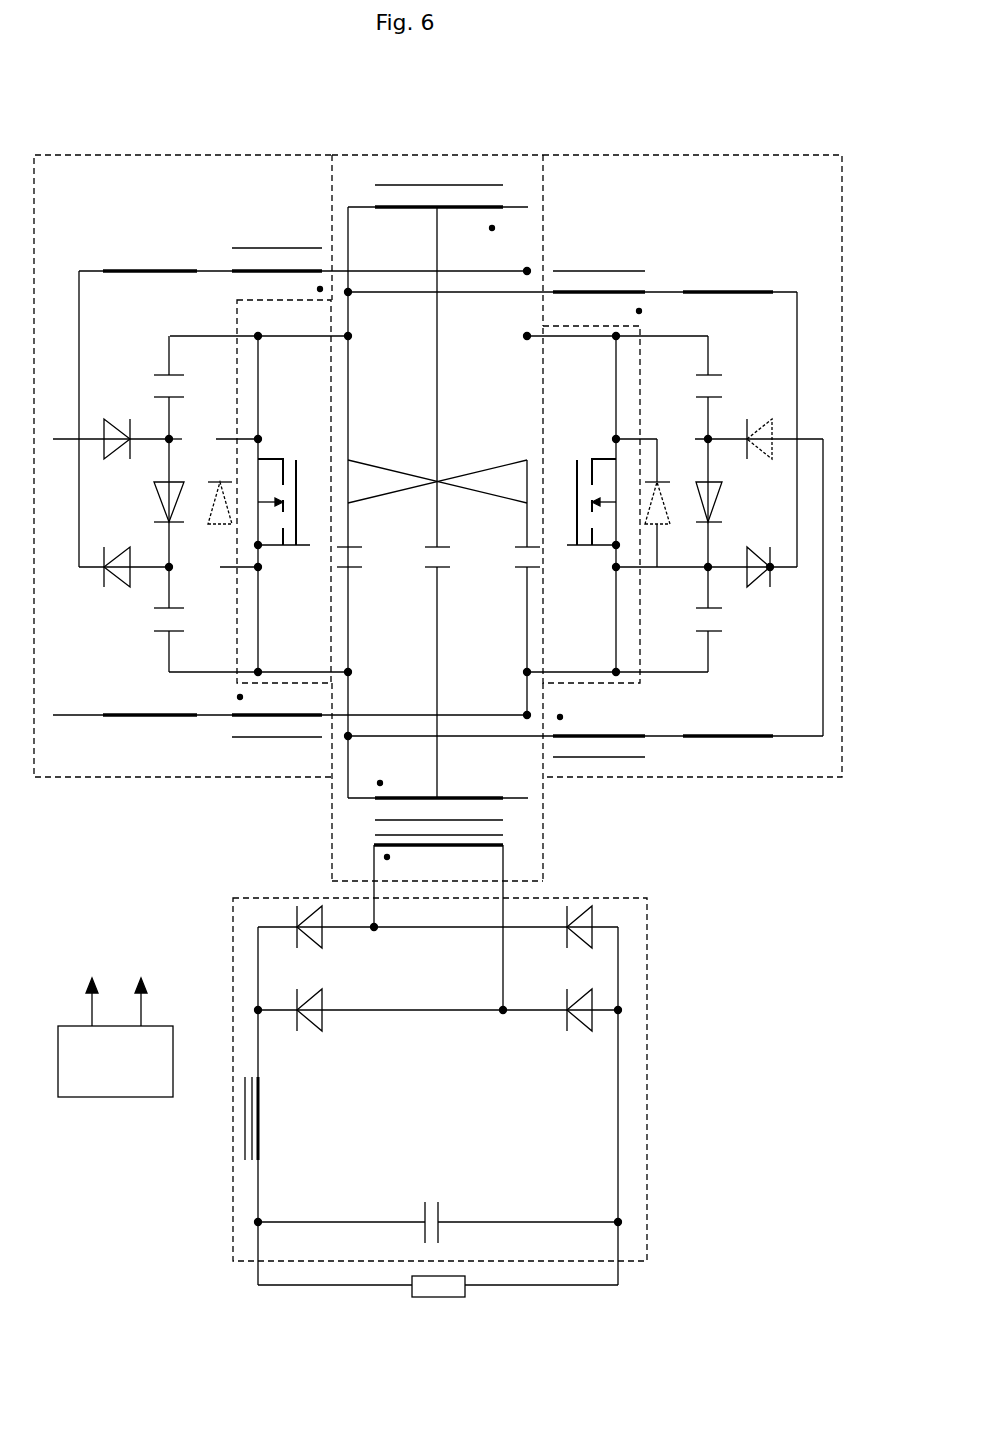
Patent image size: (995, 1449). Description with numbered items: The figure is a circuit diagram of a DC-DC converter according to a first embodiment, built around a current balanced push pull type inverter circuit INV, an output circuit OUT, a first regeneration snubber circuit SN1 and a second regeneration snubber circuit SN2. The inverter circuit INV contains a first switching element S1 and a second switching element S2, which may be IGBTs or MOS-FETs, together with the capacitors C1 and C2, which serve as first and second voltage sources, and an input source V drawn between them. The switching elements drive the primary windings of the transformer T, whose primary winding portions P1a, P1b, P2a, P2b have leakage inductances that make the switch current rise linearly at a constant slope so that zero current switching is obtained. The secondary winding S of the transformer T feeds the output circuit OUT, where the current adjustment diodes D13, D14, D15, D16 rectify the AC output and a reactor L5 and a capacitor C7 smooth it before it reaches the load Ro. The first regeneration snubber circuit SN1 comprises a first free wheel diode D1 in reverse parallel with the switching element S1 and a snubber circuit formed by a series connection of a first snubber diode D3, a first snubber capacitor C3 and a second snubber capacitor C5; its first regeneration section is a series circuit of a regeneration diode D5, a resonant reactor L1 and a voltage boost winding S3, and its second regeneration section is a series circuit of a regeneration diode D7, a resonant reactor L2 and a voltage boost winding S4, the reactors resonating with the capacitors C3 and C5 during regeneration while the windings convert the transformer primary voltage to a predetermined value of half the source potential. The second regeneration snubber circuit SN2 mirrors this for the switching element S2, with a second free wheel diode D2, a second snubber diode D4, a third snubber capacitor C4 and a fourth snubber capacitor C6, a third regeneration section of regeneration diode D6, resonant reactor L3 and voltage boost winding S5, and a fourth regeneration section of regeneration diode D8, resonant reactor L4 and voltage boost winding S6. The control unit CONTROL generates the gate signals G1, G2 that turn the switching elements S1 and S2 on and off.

The first regeneration snubber circuit SN1 is at (182, 445).
The second regeneration snubber circuit SN2 is at (692, 445).
The inverter circuit INV is at (437, 497).
The output circuit OUT is at (441, 1058).
The transformer T is at (431, 510).
The primary winding portion P1a is at (461, 233).
The primary winding portion P1b is at (398, 233).
The primary winding portion P2a is at (461, 785).
The primary winding portion P2b is at (398, 785).
The secondary winding S is at (438, 927).
The first switching element S1 is at (290, 504).
The second switching element S2 is at (578, 504).
The voltage boost winding S3 is at (284, 491).
The voltage boost winding S4 is at (275, 689).
The voltage boost winding S5 is at (591, 490).
The voltage boost winding S6 is at (598, 704).
The capacitor C1 is at (363, 563).
The capacitor C2 is at (509, 563).
The first snubber capacitor C3 is at (182, 639).
The third snubber capacitor C4 is at (689, 639).
The second snubber capacitor C5 is at (182, 472).
The fourth snubber capacitor C6 is at (689, 472).
The capacitor C7 is at (438, 1221).
The input voltage source V is at (441, 583).
The resonant reactor L1 is at (212, 287).
The resonant reactor L2 is at (290, 711).
The resonant reactor L3 is at (663, 299).
The resonant reactor L4 is at (585, 721).
The reactor L5 is at (229, 1118).
The first free wheel diode D1 is at (213, 497).
The second free wheel diode D2 is at (662, 497).
The first snubber diode D3 is at (145, 508).
The second snubber diode D4 is at (723, 508).
The regeneration diode D5 is at (120, 585).
The regeneration diode D6 is at (752, 585).
The regeneration diode D7 is at (111, 424).
The regeneration diode D8 is at (759, 424).
The current adjustment diode D13 is at (333, 937).
The current adjustment diode D14 is at (556, 937).
The current adjustment diode D15 is at (333, 1020).
The current adjustment diode D16 is at (556, 1020).
The load Ro is at (438, 1311).
The gate signal G1 is at (93, 984).
The gate signal G2 is at (141, 984).
The control unit CONTROL is at (115, 1061).